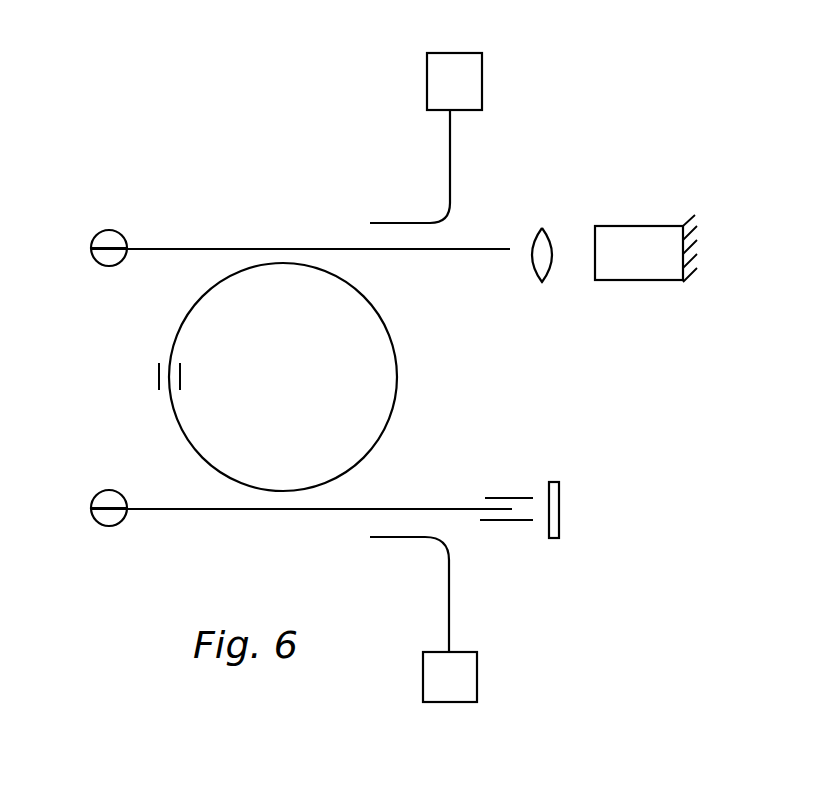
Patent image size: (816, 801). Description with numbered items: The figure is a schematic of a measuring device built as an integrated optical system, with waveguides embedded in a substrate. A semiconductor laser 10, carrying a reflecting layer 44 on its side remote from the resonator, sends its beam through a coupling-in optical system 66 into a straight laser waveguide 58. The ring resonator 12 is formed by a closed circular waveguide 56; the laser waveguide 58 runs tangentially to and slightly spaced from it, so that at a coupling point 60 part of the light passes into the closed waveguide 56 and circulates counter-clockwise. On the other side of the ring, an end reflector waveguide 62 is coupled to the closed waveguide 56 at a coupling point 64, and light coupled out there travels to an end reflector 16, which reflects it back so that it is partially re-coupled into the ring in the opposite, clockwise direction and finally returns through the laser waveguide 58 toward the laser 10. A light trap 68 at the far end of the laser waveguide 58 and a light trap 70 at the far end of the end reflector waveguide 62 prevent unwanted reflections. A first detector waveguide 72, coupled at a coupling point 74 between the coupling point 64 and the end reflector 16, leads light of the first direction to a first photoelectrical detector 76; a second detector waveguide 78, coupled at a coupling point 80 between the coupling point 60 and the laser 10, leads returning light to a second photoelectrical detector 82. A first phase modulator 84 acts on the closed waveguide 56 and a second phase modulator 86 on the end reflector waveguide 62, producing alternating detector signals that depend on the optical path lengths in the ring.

The semiconductor laser 10 is at (640, 265).
The ring resonator 12 is at (277, 377).
The end reflector 16 is at (560, 510).
The reflecting layer 44 is at (690, 225).
The closed circular waveguide 56 is at (397, 398).
The laser waveguide 58 is at (166, 249).
The coupling point 60 is at (236, 247).
The end reflector waveguide 62 is at (175, 510).
The coupling point 64 is at (288, 516).
The coupling-in optical system 66 is at (540, 242).
The light trap 68 is at (118, 232).
The light trap 70 is at (108, 496).
The first detector waveguide 72 is at (449, 605).
The coupling point 74 is at (434, 505).
The first photoelectrical detector 76 is at (477, 675).
The second detector waveguide 78 is at (450, 168).
The coupling point 80 is at (388, 263).
The second photoelectrical detector 82 is at (470, 73).
The first phase modulator 84 is at (181, 370).
The second phase modulator 86 is at (513, 497).